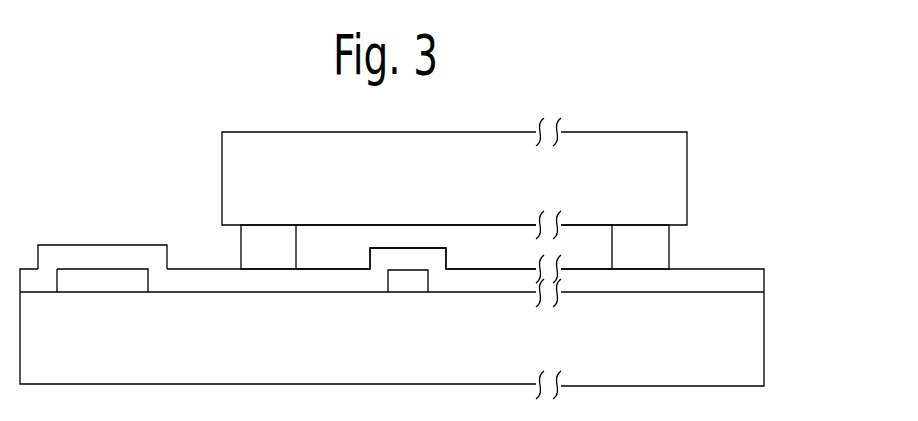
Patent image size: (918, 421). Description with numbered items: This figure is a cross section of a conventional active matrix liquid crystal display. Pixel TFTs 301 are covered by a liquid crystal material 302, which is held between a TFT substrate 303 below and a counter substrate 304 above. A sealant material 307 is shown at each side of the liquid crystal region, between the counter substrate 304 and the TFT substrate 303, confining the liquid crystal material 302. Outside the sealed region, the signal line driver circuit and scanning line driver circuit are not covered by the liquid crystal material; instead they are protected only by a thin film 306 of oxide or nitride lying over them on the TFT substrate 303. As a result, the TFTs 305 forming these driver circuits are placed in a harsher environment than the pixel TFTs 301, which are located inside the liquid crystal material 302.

The pixel TFT 301 is at (414, 293).
The liquid crystal material 302 is at (454, 247).
The TFT substrate 303 is at (392, 317).
The counter substrate 304 is at (454, 178).
The driver circuit TFT 305 is at (120, 309).
The thin film 306 is at (102, 244).
The sealant material 307 is at (260, 235).